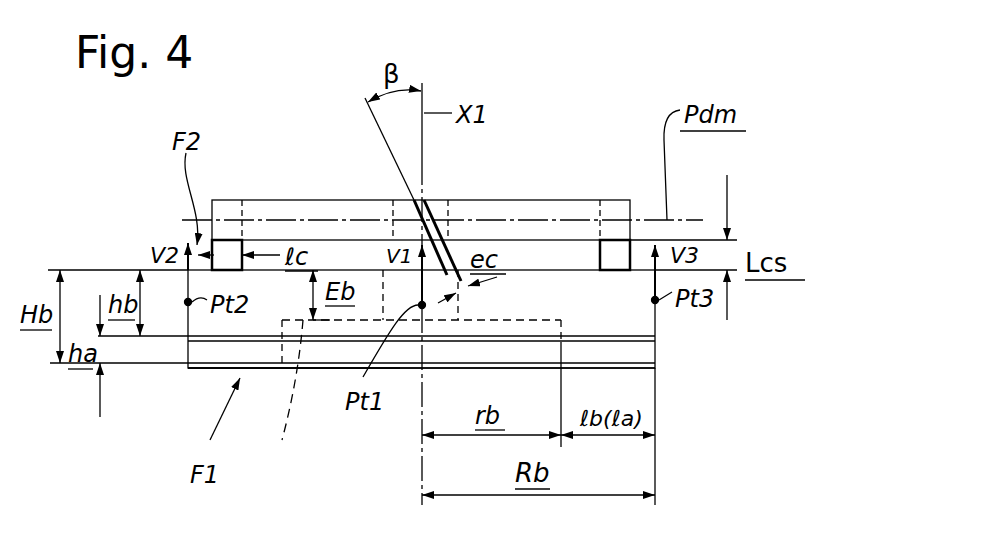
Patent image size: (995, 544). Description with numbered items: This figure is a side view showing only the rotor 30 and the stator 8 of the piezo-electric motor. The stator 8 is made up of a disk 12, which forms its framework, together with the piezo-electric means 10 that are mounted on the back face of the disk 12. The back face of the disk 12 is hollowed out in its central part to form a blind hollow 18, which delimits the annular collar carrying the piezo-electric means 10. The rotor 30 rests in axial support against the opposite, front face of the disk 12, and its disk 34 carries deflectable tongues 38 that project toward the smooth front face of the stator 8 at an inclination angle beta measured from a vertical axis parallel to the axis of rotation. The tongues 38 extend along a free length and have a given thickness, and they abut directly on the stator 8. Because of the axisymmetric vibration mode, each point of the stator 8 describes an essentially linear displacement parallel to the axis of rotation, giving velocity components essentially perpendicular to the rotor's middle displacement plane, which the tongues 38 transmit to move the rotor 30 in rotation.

The rotor 30 is at (421, 154).
The disk 34 is at (524, 207).
The deflectable tongue 38 is at (452, 238).
The disk 12 is at (613, 298).
The piezo-electric means 10 is at (660, 358).
The stator 8 is at (203, 378).
The blind hollow 18 is at (282, 404).